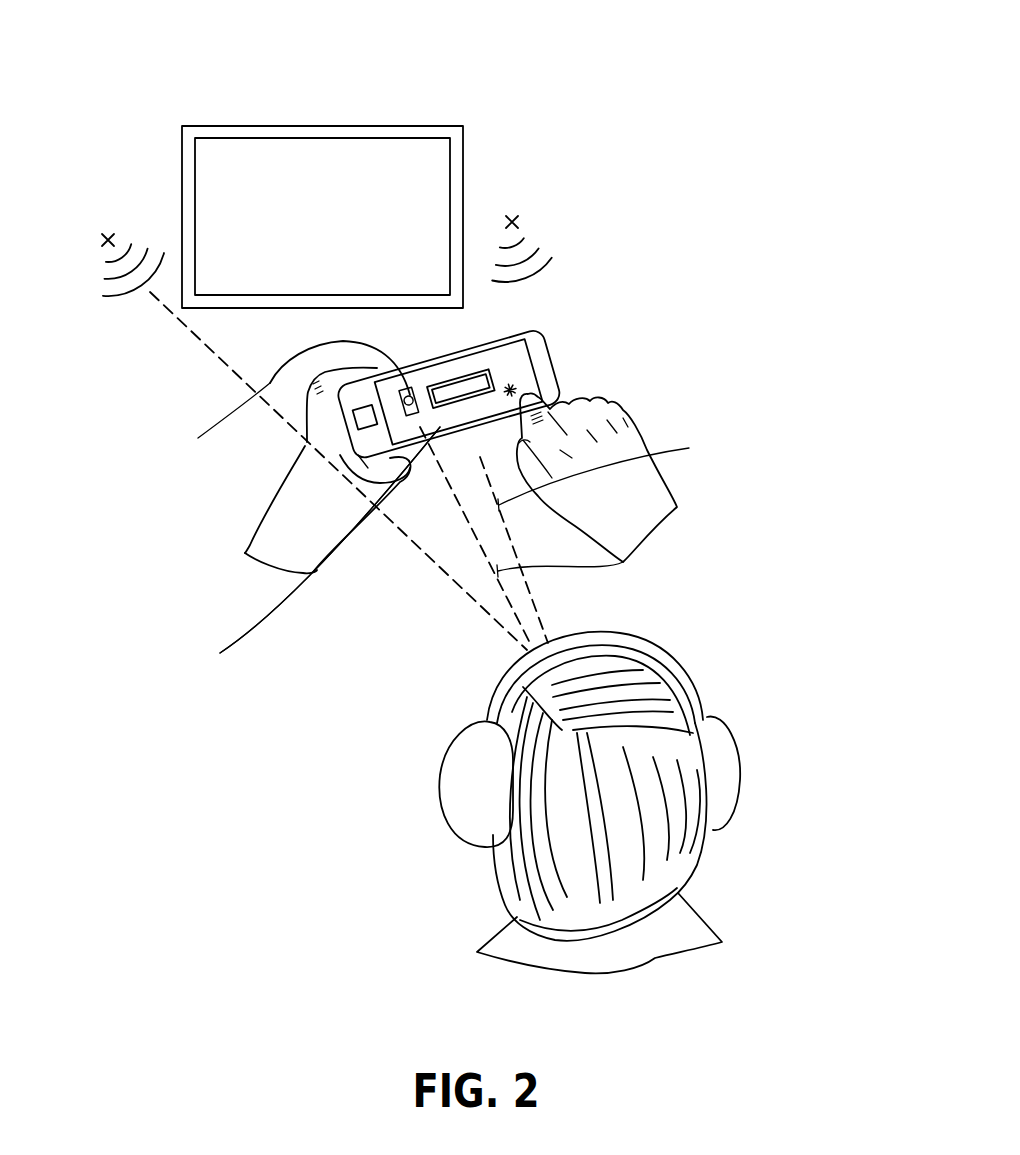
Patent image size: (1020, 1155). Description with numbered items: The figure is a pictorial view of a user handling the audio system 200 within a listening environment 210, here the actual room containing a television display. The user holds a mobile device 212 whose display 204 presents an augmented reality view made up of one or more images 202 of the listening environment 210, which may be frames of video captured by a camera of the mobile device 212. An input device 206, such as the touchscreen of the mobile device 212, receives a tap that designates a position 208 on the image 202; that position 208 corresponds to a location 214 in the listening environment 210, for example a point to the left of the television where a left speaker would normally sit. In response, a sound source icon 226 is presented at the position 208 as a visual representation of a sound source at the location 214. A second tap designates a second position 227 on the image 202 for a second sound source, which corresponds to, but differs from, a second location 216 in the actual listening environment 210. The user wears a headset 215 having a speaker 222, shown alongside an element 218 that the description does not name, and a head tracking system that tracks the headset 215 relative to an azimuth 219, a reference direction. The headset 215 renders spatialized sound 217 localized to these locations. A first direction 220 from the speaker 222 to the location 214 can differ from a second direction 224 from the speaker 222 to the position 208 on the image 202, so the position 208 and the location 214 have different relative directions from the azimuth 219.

The audio system 200 is at (540, 320).
The image 202 is at (515, 355).
The display 204 is at (304, 547).
The input device 206 is at (306, 560).
The position 208 is at (165, 417).
The listening environment 210 is at (733, 59).
The mobile device 212 is at (305, 445).
The location 214 is at (110, 236).
The headset 215 is at (737, 757).
The second location 216 is at (516, 214).
The sound 217 is at (124, 297).
The earcup speaker 218 is at (437, 784).
The azimuth 219 is at (635, 466).
The first direction 220 is at (418, 548).
The speaker 222 is at (789, 763).
The second direction 224 is at (623, 562).
The sound source icon 226 is at (215, 454).
The second position 227 is at (517, 380).